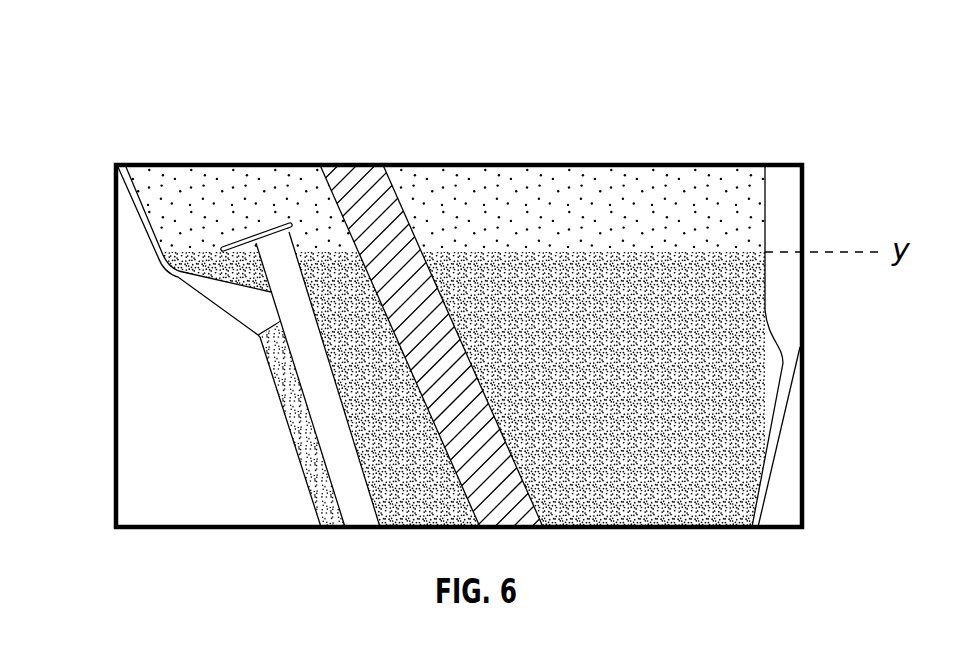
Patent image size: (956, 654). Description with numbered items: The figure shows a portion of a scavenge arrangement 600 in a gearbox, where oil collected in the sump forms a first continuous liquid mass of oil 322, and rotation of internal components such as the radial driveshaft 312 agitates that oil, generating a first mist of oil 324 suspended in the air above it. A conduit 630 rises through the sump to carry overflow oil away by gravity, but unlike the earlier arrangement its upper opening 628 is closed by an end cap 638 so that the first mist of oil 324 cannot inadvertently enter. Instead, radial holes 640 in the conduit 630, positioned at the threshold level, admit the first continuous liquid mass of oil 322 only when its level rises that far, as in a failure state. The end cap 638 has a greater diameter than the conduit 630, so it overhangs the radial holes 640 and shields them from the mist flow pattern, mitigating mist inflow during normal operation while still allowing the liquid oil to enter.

The scavenge arrangement 600 is at (108, 58).
The upper opening 628 is at (258, 222).
The end cap 638 is at (298, 216).
The radial holes 640 is at (262, 256).
The conduit 630 is at (300, 427).
The radial driveshaft 312 is at (410, 218).
The first mist of oil 324 is at (658, 184).
The first continuous liquid mass of oil 322 is at (692, 500).